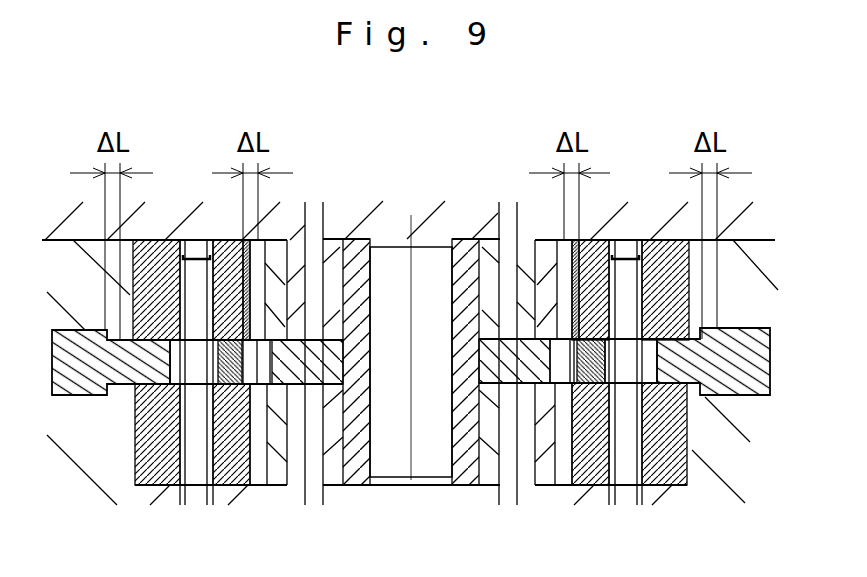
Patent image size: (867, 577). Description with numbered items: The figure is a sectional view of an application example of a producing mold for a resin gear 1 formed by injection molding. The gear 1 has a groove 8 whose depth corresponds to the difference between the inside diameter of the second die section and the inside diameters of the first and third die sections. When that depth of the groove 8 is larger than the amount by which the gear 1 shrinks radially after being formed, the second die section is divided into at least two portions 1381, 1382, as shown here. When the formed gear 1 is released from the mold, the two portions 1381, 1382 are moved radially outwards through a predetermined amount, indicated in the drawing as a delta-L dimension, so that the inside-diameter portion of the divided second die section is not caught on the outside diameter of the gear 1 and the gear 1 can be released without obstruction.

The gear 1 is at (374, 236).
The groove 8 is at (568, 372).
The portion of second die section 1381 is at (98, 368).
The portion of second die section 1382 is at (742, 385).